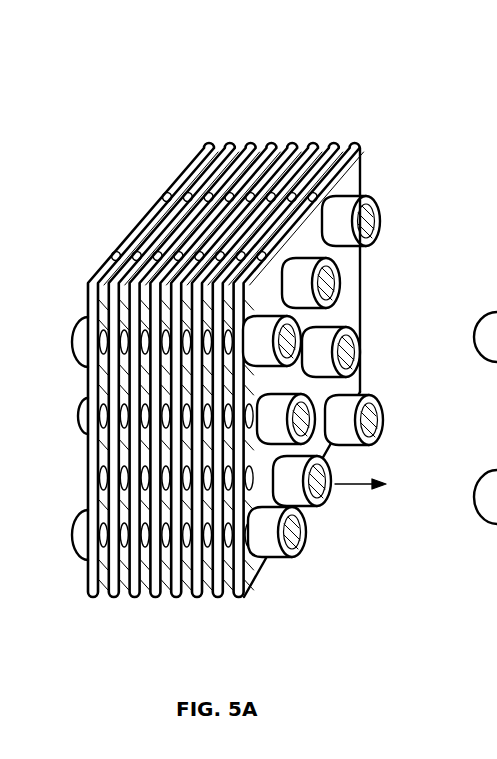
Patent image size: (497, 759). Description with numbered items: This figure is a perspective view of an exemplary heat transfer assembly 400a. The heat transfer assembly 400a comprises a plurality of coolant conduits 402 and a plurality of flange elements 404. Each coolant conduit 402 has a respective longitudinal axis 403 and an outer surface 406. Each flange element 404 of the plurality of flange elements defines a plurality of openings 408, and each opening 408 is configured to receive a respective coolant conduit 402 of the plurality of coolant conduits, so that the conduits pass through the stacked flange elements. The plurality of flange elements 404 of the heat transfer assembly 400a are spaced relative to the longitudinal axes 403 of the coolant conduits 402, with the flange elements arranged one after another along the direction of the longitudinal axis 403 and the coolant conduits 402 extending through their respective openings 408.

The heat transfer assembly 400a is at (114, 190).
The coolant conduit 402 is at (338, 288).
The flange element 404 is at (361, 312).
The outer surface 406 is at (364, 393).
The longitudinal axis 403 is at (331, 492).
The opening 408 is at (250, 586).